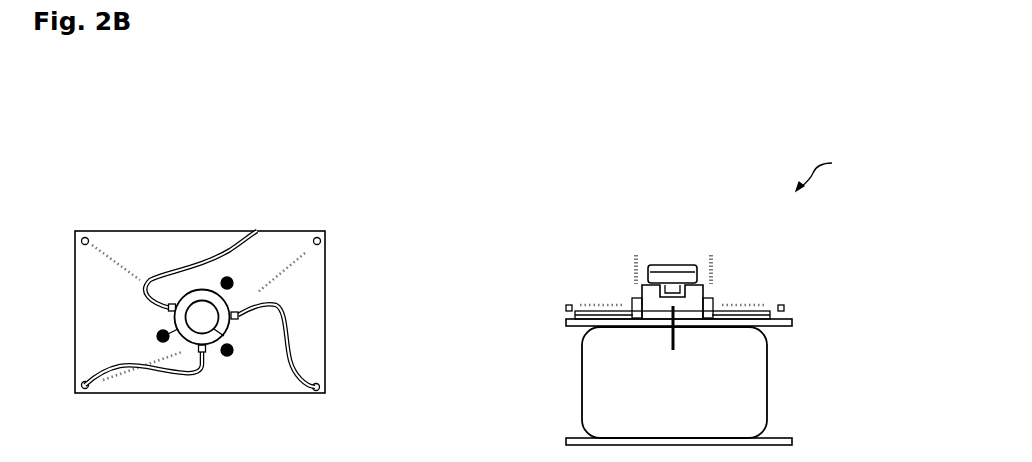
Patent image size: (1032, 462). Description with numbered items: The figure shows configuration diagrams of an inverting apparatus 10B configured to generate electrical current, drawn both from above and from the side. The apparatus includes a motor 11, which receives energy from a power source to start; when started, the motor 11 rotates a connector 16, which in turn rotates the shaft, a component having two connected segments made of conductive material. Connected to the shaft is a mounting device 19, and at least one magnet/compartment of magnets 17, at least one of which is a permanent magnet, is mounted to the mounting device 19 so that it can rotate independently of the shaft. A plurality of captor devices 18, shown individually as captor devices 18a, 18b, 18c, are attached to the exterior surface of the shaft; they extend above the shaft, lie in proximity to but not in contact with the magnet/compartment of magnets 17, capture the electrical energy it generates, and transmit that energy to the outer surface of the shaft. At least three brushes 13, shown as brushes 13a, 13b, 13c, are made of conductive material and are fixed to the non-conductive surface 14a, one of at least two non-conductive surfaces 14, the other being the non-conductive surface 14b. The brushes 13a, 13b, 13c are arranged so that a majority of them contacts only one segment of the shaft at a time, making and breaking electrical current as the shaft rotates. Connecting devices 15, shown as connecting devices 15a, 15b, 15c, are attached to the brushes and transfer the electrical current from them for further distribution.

The inverting apparatus 10B is at (840, 172).
The motor 11 is at (763, 393).
The brushes 13 is at (633, 300).
The brush 13a is at (204, 362).
The brush 13b is at (239, 318).
The brush 13c is at (173, 304).
The non-conductive surfaces 14 is at (167, 394).
The non-conductive surface 14a is at (565, 322).
The non-conductive surface 14b is at (565, 439).
The connecting devices 15 is at (767, 300).
The connecting device 15a is at (108, 380).
The connecting device 15b is at (302, 253).
The connecting device 15c is at (112, 253).
The connector 16 is at (670, 345).
The magnet/compartment of magnets 17 is at (224, 336).
The captor devices 18 is at (710, 248).
The captor device 18a is at (231, 355).
The captor device 18b is at (233, 283).
The captor device 18c is at (164, 330).
The mounting device 19 is at (690, 290).